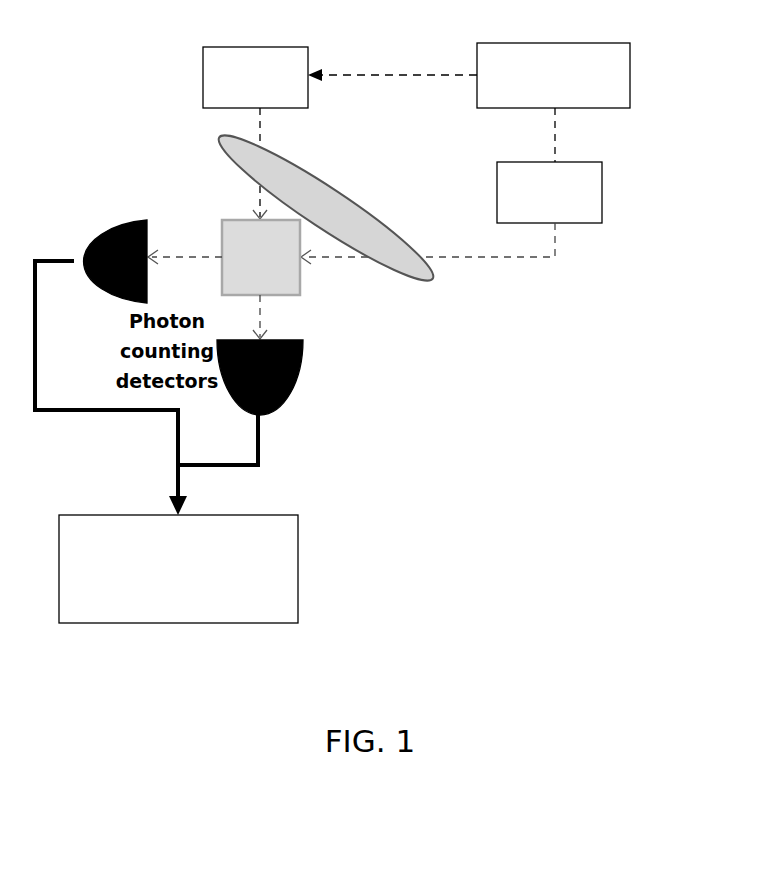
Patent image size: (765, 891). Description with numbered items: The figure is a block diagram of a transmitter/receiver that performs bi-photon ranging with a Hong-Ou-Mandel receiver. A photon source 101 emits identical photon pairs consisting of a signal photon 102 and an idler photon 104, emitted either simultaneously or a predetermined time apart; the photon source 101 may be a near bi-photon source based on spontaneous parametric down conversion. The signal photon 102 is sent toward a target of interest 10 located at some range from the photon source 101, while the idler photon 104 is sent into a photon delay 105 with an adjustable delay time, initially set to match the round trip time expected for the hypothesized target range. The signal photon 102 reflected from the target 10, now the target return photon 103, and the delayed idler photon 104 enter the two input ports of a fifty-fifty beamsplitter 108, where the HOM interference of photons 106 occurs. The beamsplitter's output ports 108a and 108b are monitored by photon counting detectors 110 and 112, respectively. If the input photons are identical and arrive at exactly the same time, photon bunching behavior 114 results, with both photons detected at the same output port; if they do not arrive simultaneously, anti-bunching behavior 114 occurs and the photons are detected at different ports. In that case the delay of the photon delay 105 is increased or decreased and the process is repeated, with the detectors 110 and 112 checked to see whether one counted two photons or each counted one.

The target of interest 10 is at (255, 60).
The photon source 101 is at (622, 108).
The signal photon 102 is at (398, 75).
The target return photon 103 is at (260, 130).
The idler photon 104 is at (340, 262).
The photon delay 105 is at (595, 223).
The HOM interference of photons 106 is at (357, 206).
The beamsplitter 108 is at (232, 220).
The first output port of the beamsplitter 108a is at (262, 318).
The second output port of the beamsplitter 108b is at (192, 258).
The photon counting detector 110 is at (283, 406).
The photon counting detector 112 is at (97, 231).
The bunching or anti-bunching behavior 114 is at (298, 543).